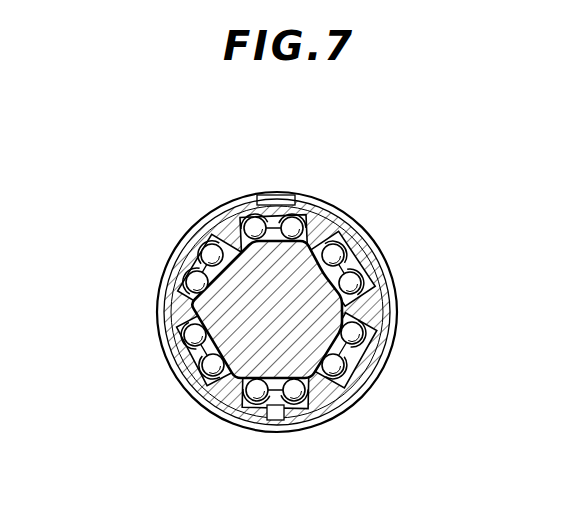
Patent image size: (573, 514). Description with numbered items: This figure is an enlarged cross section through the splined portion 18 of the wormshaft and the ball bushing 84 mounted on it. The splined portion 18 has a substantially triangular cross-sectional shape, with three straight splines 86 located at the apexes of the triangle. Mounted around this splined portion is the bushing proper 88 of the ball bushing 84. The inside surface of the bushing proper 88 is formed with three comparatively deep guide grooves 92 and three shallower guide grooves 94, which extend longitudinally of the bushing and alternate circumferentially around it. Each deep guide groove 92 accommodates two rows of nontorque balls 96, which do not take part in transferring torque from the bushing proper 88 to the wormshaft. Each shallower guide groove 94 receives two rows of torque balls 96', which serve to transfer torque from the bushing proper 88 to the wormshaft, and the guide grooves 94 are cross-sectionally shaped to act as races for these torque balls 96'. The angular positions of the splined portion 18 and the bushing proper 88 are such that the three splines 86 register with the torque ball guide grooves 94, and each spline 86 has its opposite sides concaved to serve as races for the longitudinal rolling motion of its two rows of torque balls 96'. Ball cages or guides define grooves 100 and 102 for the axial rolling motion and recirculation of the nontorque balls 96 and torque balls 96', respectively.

The splined portion 18 is at (287, 319).
The ball bushing 84 is at (358, 208).
The straight splines 86 is at (297, 215).
The bushing proper 88 is at (393, 302).
The guide grooves 92 is at (185, 262).
The guide grooves 94 is at (267, 216).
The nontorque balls 96 is at (309, 345).
The torque balls 96' is at (274, 287).
The grooves 100 is at (195, 232).
The grooves 102 is at (246, 222).